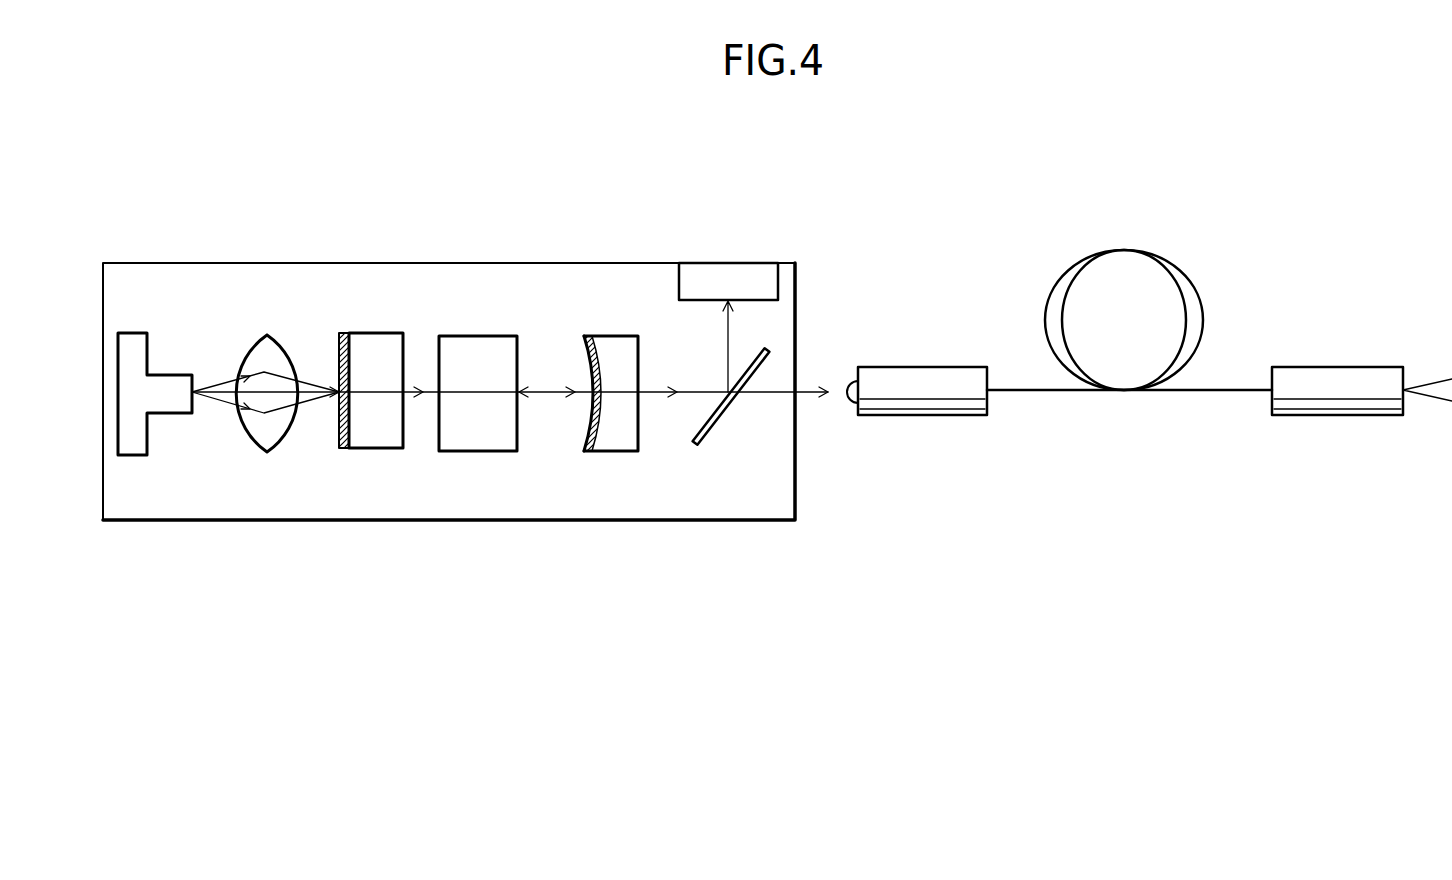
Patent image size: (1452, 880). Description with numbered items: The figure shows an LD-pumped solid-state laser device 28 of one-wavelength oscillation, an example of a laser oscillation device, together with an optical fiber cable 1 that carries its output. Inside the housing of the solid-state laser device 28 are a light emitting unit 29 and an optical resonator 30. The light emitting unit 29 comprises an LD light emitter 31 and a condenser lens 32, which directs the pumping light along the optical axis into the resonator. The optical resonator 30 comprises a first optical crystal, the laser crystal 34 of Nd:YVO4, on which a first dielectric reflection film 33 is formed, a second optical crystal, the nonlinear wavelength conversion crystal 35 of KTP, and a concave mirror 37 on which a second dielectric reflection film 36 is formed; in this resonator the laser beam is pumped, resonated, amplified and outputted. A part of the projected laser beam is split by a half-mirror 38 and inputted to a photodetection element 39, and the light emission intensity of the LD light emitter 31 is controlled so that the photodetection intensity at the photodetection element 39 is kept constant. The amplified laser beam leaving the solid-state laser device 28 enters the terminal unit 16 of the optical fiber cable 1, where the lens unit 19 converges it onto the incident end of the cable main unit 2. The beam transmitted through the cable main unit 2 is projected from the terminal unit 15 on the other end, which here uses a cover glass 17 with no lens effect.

The optical fiber cable 1 is at (1224, 273).
The cable main unit 2 is at (1022, 388).
The terminal unit 15 is at (1355, 356).
The terminal unit 16 is at (925, 358).
The cover glass 17 is at (1405, 403).
The lens unit 19 is at (850, 403).
The solid-state laser device 28 is at (414, 256).
The light emitting unit 29 is at (190, 304).
The optical resonator 30 is at (510, 302).
The LD light emitter 31 is at (130, 455).
The condenser lens 32 is at (245, 445).
The first dielectric reflection film 33 is at (330, 432).
The laser crystal 34 is at (368, 450).
The wavelength conversion crystal 35 is at (470, 452).
The second dielectric reflection film 36 is at (586, 443).
The concave mirror 37 is at (607, 452).
The half-mirror 38 is at (733, 405).
The photodetection element 39 is at (780, 280).